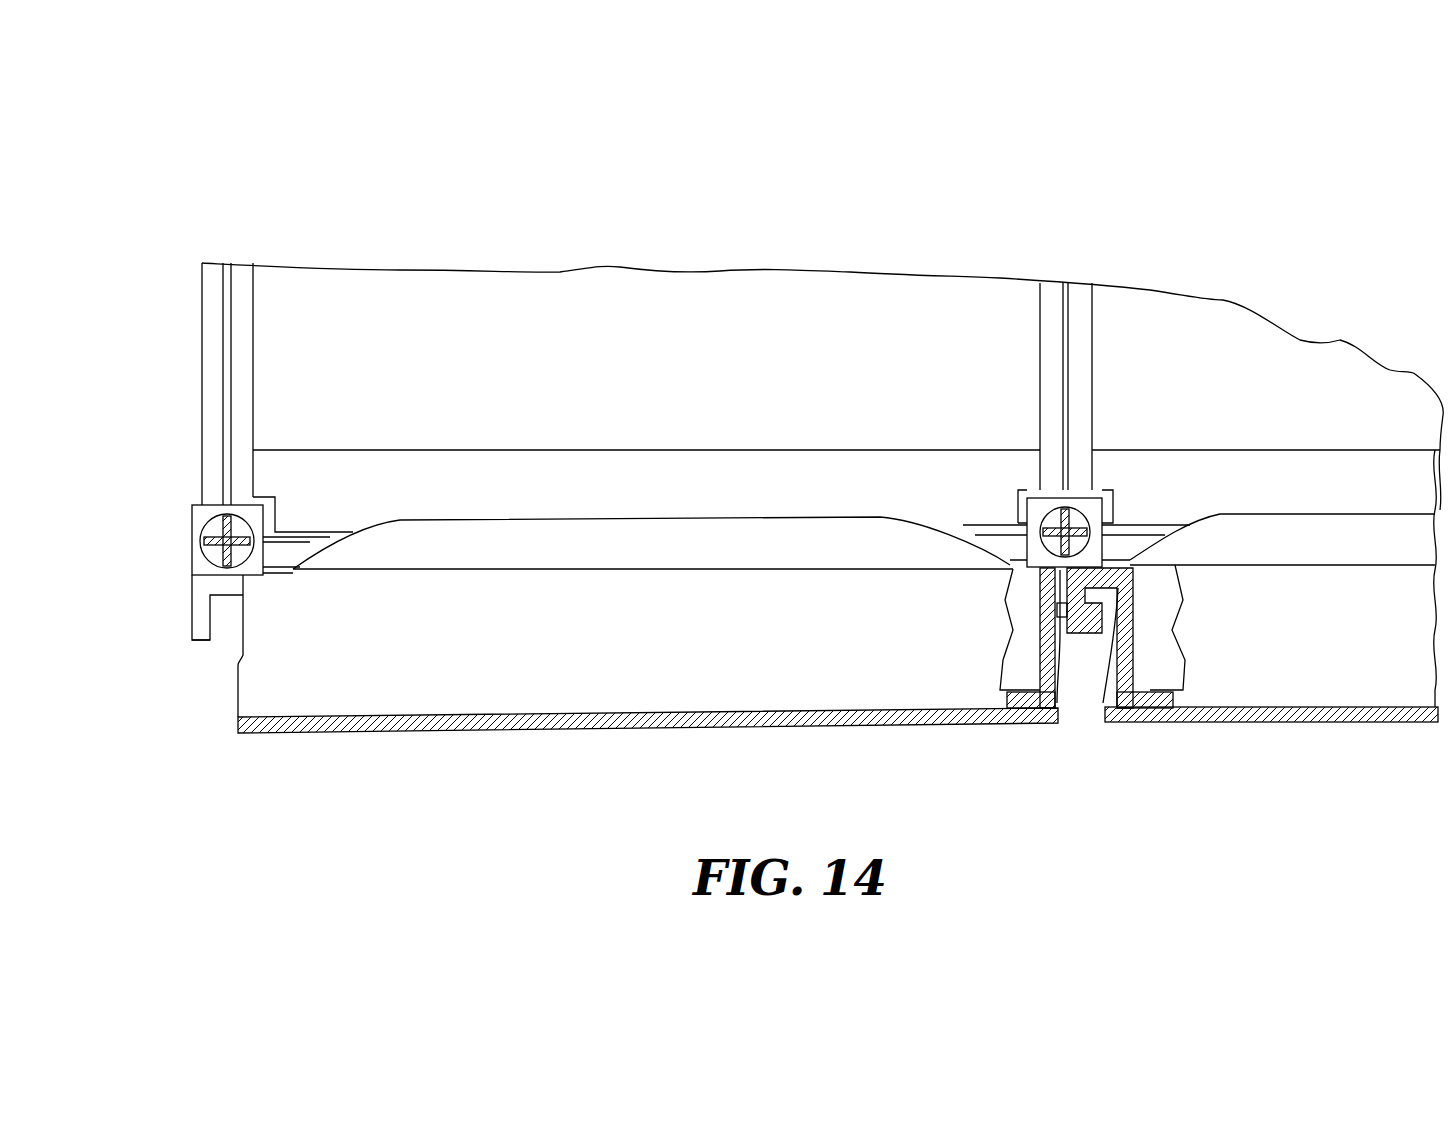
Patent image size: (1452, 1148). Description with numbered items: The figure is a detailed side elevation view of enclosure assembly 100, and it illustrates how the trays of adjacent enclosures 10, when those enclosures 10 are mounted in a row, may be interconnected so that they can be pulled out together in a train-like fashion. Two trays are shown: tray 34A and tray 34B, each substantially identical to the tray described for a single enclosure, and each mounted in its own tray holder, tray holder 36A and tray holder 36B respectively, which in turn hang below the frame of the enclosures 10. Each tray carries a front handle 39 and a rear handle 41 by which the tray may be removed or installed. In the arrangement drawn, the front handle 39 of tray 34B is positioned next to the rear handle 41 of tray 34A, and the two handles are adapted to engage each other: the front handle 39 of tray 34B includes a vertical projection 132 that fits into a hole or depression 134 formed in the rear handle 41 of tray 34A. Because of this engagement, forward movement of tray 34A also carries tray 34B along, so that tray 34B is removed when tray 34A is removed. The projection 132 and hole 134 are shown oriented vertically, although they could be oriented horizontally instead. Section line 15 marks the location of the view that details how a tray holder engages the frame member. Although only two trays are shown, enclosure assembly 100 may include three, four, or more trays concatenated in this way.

The enclosure assembly 100 is at (881, 190).
The enclosure assembly 10 is at (609, 288).
The section line 15- 15 is at (108, 507).
The front handle 39 is at (198, 622).
The vertical projection 132 is at (203, 643).
The hole or depression 134 is at (1058, 621).
The rear handle 41 is at (1058, 636).
The tray 34A is at (646, 617).
The tray 34B is at (1276, 579).
The tray holder 36A is at (645, 724).
The tray holder 36B is at (1310, 716).